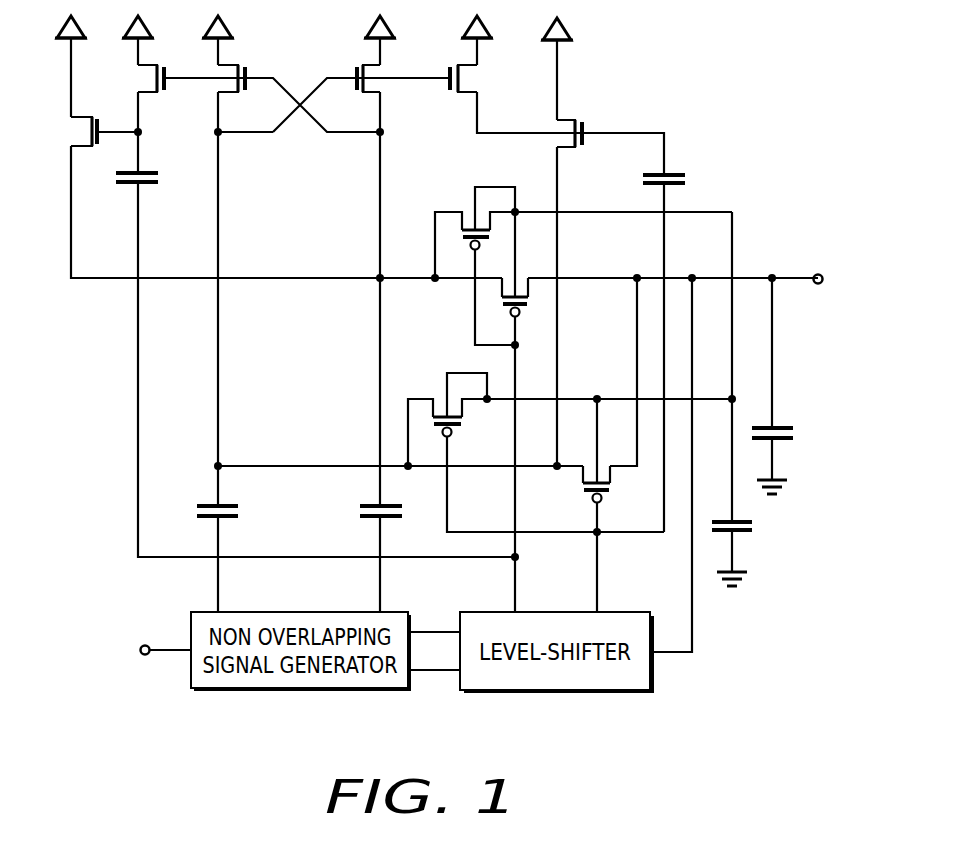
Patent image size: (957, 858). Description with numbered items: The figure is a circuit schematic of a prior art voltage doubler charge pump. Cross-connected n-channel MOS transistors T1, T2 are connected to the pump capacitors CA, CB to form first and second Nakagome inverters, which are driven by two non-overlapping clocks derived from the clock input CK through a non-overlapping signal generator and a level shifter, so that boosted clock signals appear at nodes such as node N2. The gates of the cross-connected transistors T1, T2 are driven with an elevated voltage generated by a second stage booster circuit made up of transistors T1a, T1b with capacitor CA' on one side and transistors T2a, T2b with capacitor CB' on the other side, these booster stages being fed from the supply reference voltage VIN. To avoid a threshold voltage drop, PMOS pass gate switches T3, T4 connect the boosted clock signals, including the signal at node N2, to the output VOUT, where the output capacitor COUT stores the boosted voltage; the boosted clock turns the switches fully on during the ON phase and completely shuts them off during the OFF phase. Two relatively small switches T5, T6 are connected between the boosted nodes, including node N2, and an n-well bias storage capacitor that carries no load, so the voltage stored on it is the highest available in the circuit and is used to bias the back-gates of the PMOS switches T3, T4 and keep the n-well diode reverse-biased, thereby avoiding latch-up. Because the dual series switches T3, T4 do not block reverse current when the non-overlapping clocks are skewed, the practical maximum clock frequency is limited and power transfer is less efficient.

The second stage booster transistor T1a is at (133, 78).
The second stage booster transistor T1b is at (66, 131).
The cross-connected NMOS transistor T1 is at (238, 261).
The cross-connected NMOS transistor T2 is at (362, 95).
The second stage booster transistor T2a is at (454, 95).
The second stage booster transistor T2b is at (577, 119).
The PMOS pass gate switch T3 is at (524, 445).
The PMOS pass gate switch T4 is at (612, 505).
The small switch T5 is at (583, 264).
The small switch T6 is at (570, 451).
The second stage booster capacitor CA' is at (154, 179).
The second stage booster capacitor CB' is at (682, 181).
The pump capacitor CA is at (236, 512).
The pump capacitor CB is at (366, 512).
The output capacitor COUT is at (799, 439).
The node N2 is at (392, 265).
The supply reference voltage VIN is at (304, 29).
The output VOUT is at (847, 285).
The clock input CK is at (129, 651).